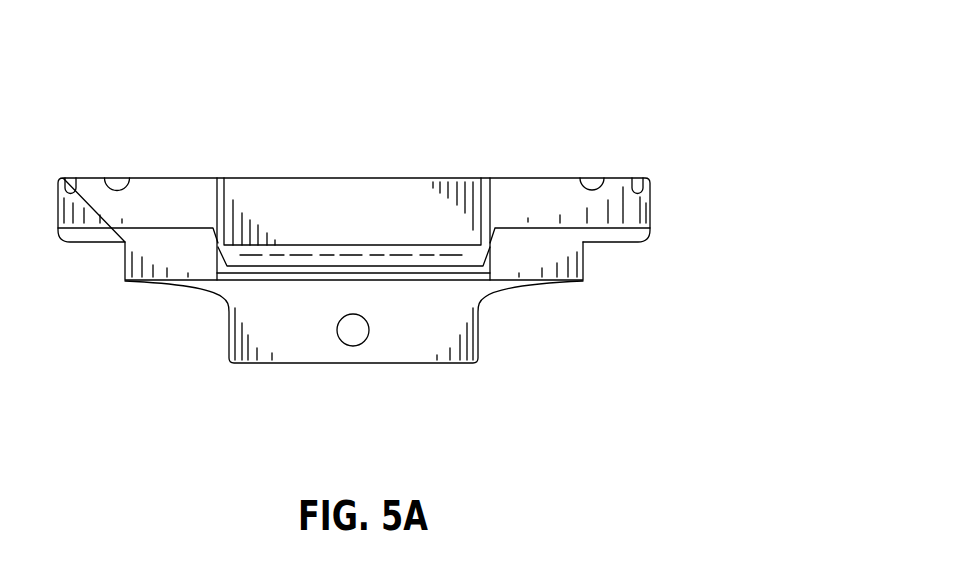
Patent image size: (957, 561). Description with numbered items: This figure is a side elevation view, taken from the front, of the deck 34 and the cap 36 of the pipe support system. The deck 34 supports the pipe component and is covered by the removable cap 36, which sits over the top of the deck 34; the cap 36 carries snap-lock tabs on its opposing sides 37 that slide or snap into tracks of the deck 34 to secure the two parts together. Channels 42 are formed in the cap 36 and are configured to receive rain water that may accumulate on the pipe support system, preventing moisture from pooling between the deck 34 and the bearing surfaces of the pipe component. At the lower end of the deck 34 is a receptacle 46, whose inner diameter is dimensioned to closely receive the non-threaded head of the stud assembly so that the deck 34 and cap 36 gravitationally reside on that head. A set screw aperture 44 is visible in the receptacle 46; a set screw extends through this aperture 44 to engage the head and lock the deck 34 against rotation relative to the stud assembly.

The deck 34 is at (586, 262).
The removable cap 36 is at (652, 197).
The opposing sides 37 is at (305, 192).
The channels 42 is at (592, 183).
The set screw aperture 44 is at (353, 330).
The receptacle 46 is at (270, 326).